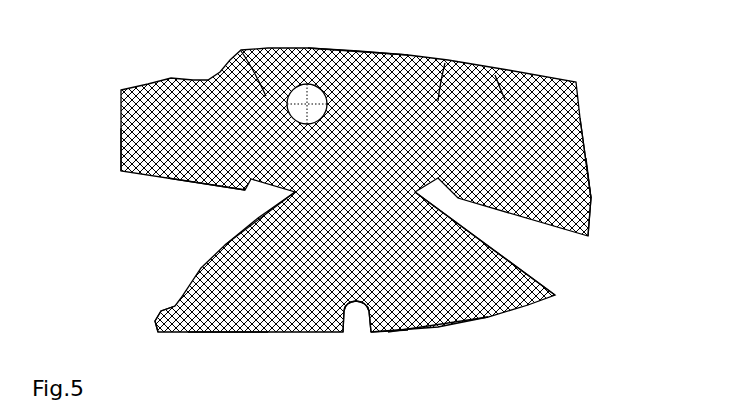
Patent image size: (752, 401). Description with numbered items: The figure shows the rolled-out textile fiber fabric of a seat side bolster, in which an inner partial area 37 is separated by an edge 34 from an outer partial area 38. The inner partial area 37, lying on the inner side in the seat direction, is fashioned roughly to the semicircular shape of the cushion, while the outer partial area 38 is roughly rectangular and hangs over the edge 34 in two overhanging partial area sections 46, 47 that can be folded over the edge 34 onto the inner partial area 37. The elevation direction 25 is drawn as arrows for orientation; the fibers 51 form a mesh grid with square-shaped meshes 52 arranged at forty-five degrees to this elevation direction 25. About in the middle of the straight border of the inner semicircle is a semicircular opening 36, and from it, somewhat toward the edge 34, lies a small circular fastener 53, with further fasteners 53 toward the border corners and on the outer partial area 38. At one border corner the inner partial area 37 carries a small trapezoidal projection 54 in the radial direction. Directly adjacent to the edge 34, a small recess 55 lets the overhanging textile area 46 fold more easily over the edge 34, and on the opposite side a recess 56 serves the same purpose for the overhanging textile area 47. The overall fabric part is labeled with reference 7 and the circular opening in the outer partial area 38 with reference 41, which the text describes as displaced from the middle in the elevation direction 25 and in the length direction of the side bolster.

The workpiece / component 7 is at (613, 62).
The hole 41 is at (277, 42).
The outer partial area 38 is at (360, 48).
The fastener 53 is at (233, 42).
The overhanging partial area section 47 is at (484, 64).
The overhanging partial area section 46 is at (197, 182).
The recess 55 is at (254, 190).
The recess 56 is at (437, 188).
The fibers 51 is at (584, 181).
The square-shaped meshes 52 is at (579, 229).
The edge 34 is at (506, 257).
The projection 54 is at (165, 325).
The semicircular opening 36 is at (350, 318).
The inner partial area 37 is at (381, 325).
The elevation direction 25 is at (66, 98).